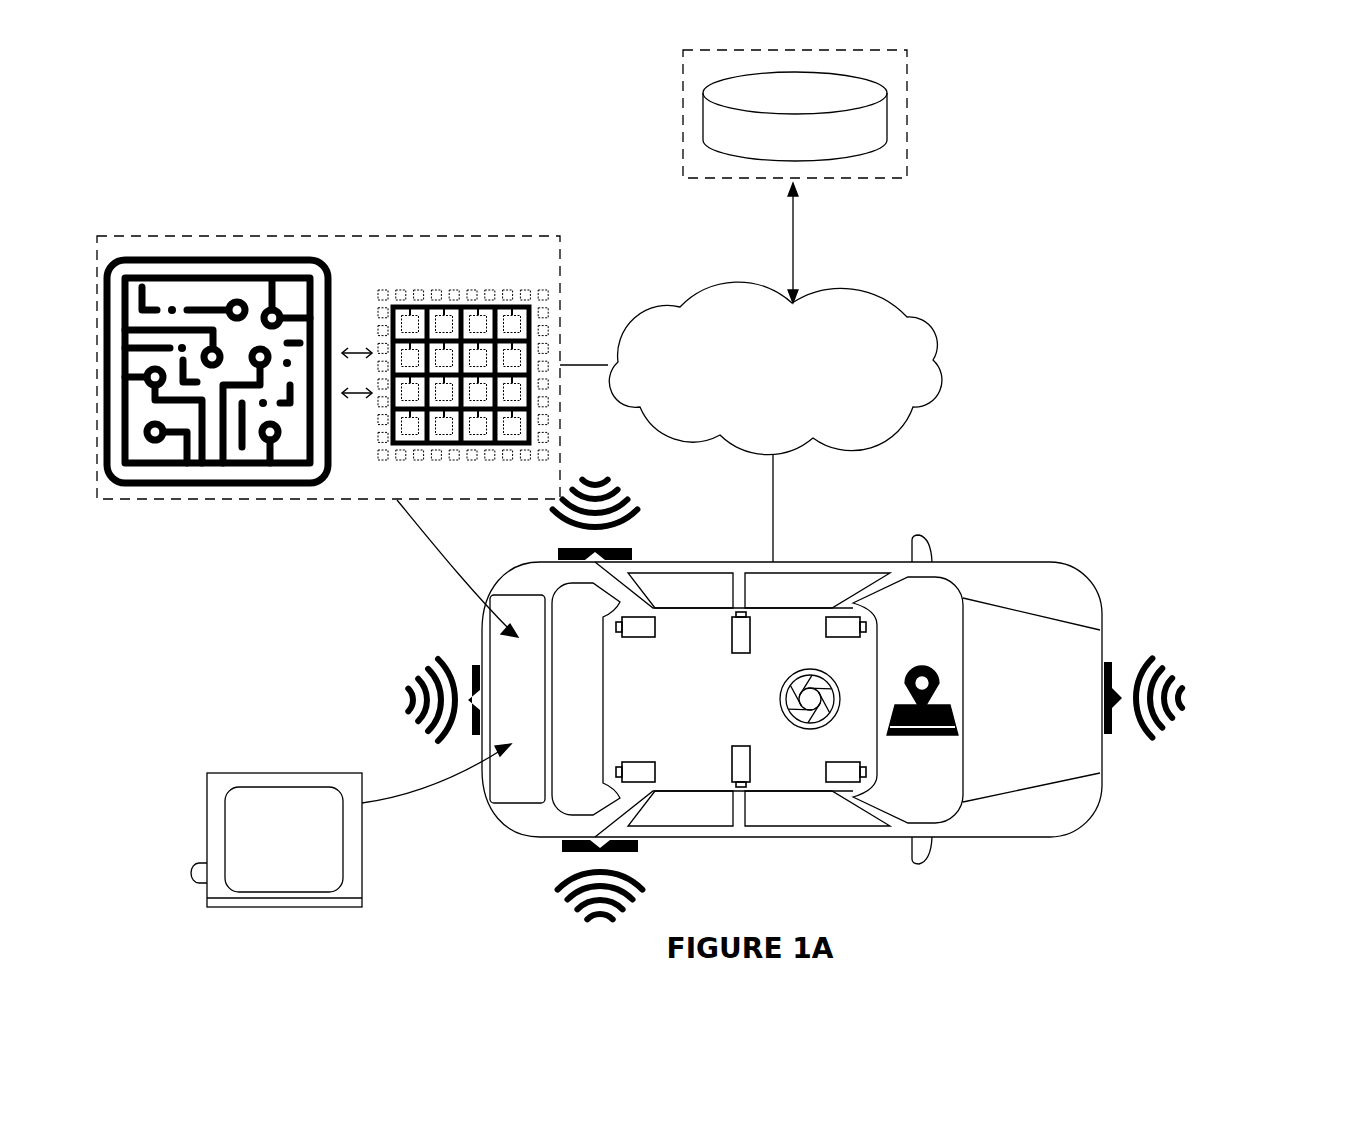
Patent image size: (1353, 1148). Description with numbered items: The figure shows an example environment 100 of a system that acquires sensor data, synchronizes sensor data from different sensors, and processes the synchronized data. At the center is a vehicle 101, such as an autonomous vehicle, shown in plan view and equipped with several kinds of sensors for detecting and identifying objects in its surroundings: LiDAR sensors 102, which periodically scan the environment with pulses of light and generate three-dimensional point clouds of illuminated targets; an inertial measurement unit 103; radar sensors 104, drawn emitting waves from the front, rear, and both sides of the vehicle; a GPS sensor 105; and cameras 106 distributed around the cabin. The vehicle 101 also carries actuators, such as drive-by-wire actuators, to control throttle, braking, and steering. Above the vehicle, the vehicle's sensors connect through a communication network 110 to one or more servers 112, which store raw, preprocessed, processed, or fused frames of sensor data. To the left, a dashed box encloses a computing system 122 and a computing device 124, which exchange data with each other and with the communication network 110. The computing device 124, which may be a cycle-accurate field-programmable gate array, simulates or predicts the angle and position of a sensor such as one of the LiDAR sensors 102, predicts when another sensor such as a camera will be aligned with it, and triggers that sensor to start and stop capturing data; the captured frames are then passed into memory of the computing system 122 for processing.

The environment 100 is at (188, 110).
The vehicle 101 is at (1015, 633).
The LiDAR sensors 102 is at (810, 730).
The inertial measurement unit 103 is at (351, 825).
The radar sensors 104 is at (620, 497).
The GPS sensor 105 is at (945, 695).
The cameras 106 is at (617, 627).
The communication network 110 is at (775, 422).
The servers 112 is at (795, 114).
The computing system 122 is at (212, 236).
The computing device 124 is at (469, 290).